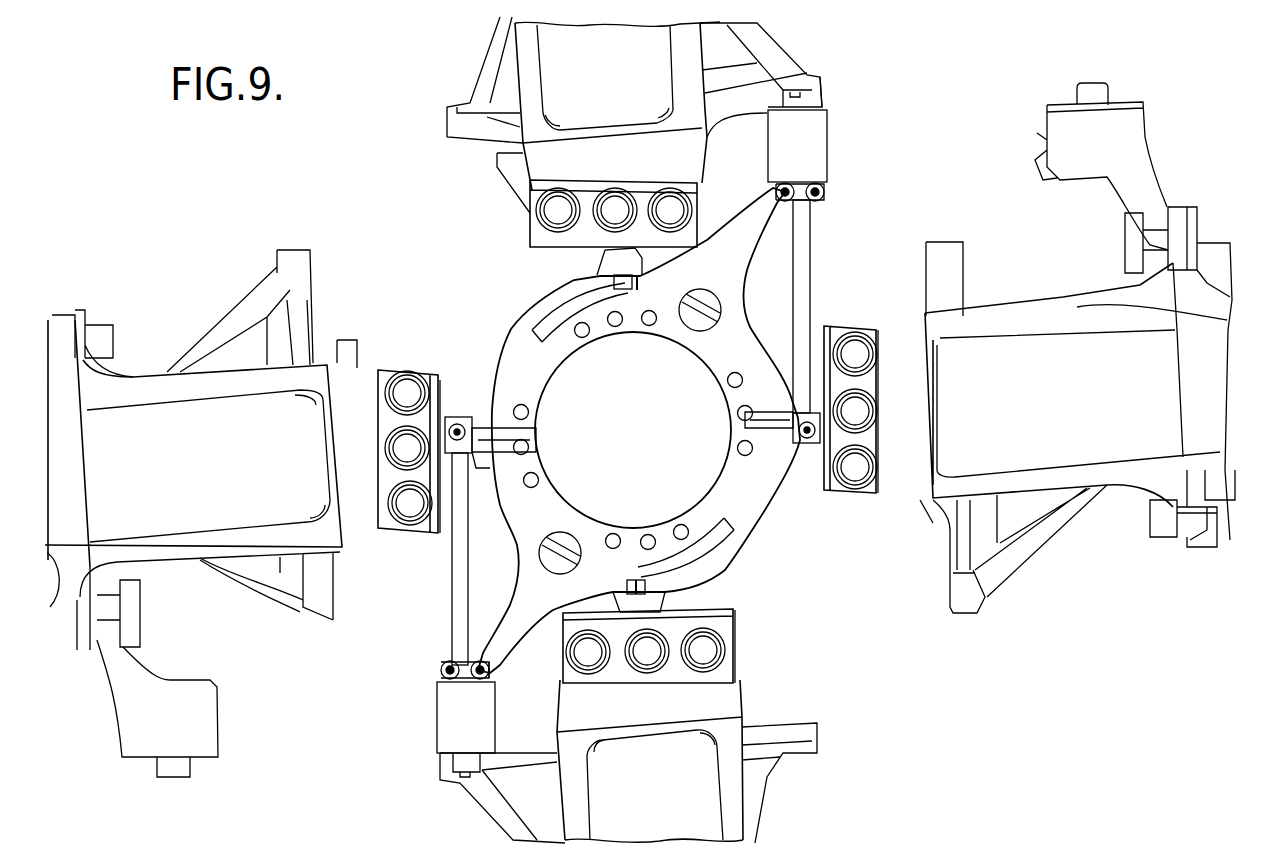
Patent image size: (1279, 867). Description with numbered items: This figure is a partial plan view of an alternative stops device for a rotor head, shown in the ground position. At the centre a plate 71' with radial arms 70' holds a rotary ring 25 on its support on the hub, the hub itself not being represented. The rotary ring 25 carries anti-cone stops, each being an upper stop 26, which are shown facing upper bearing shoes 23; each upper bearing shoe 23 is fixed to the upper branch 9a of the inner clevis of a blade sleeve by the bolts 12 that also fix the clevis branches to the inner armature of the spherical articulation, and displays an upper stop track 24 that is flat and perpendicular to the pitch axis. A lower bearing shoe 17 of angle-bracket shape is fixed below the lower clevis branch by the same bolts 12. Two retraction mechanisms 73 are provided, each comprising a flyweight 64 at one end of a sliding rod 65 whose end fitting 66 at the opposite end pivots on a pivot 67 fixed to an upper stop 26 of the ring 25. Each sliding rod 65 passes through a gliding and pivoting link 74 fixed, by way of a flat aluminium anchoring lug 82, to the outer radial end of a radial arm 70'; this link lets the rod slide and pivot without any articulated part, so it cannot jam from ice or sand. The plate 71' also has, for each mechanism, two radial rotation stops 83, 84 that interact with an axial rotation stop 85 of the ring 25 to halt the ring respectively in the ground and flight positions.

The upper branch 9a is at (1030, 370).
The bolts 12 is at (858, 472).
The lower bearing shoe 17 is at (938, 262).
The upper bearing shoe 23 is at (433, 380).
The upper stop track 24 is at (455, 393).
The rotary ring 25 is at (763, 510).
The upper stop 26 is at (622, 265).
The flyweight 64 is at (805, 155).
The sliding rod 65 is at (458, 578).
The end fitting 66 is at (478, 432).
The pivot 67 is at (459, 424).
The radial arm 70' is at (639, 428).
The plate 71' is at (633, 430).
The retraction mechanism 73 is at (820, 257).
The gliding and pivoting link 74 is at (828, 192).
The anchoring lug 82 is at (783, 202).
The radial rotation stop 83 is at (637, 292).
The radial rotation stop 84 is at (532, 333).
The axial rotation stop 85 is at (615, 282).